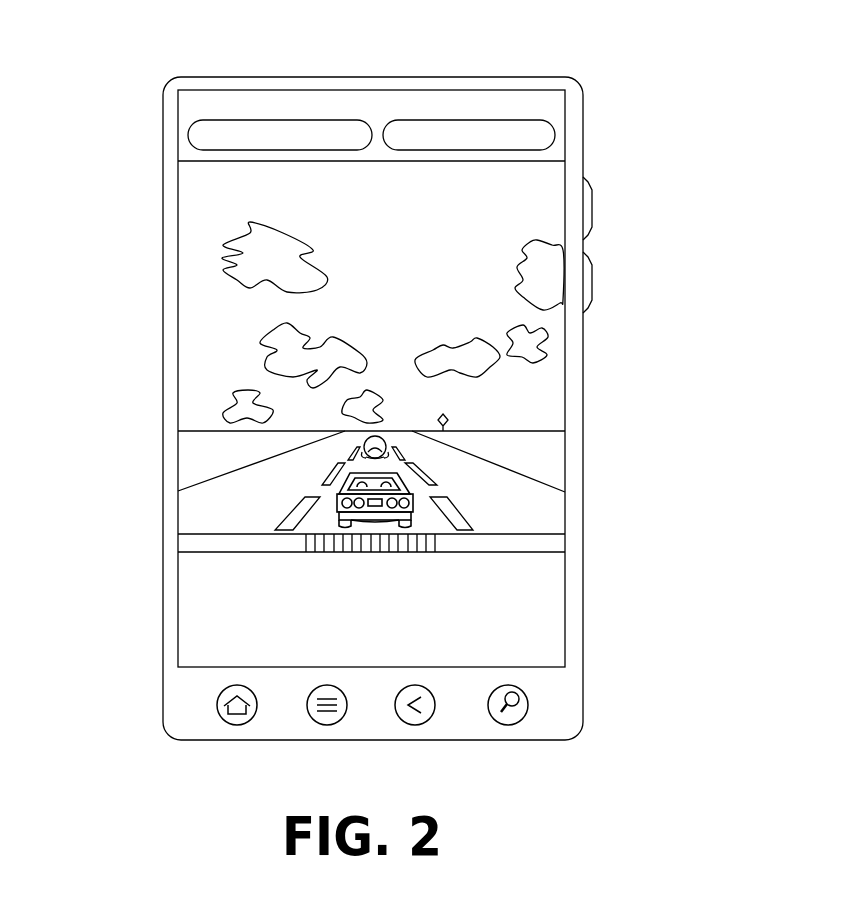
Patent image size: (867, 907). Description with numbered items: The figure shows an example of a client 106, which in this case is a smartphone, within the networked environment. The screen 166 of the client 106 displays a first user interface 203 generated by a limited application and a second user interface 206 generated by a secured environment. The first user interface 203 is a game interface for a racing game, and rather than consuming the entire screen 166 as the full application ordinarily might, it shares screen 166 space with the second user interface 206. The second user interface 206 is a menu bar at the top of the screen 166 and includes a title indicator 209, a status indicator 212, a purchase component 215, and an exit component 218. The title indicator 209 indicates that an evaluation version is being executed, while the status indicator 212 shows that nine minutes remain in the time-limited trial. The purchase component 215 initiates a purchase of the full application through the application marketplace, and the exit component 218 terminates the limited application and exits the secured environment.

The client 106 is at (630, 755).
The screen 166 is at (178, 581).
The first user interface 203 is at (205, 292).
The second user interface 206 is at (555, 100).
The title indicator 209 is at (257, 105).
The status indicator 212 is at (493, 100).
The purchase component 215 is at (200, 132).
The exit component 218 is at (527, 133).